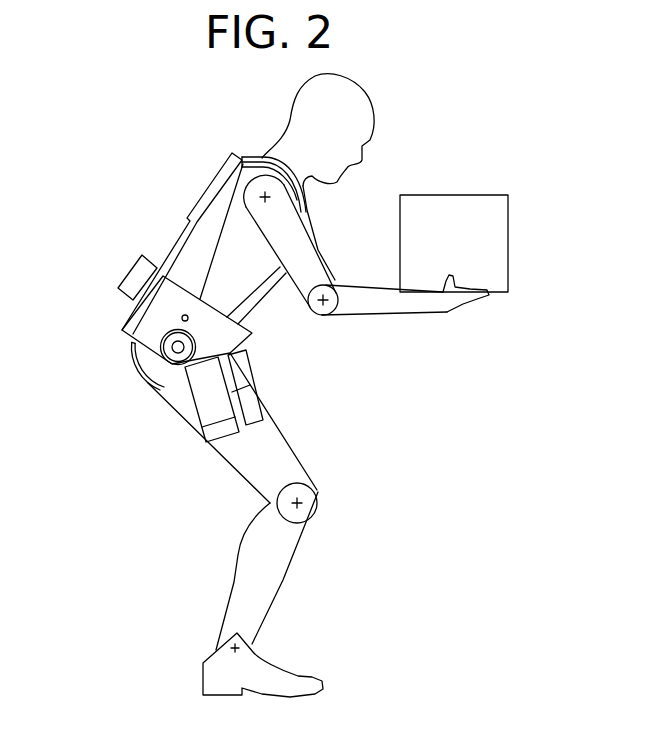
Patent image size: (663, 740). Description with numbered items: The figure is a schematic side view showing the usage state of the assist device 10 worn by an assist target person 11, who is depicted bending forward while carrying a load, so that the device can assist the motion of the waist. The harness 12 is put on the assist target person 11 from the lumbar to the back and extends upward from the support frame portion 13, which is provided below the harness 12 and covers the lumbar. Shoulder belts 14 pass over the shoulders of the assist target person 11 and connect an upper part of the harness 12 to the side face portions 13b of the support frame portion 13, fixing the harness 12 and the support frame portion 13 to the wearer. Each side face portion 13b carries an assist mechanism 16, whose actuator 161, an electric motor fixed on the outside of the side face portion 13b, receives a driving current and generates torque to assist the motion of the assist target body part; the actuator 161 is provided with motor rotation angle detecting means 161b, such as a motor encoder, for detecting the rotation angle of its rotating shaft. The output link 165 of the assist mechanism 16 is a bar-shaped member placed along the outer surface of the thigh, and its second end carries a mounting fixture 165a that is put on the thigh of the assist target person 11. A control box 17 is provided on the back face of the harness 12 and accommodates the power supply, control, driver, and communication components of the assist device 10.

The assist device 10 is at (197, 138).
The assist target person 11 is at (353, 95).
The harness 12 is at (213, 185).
The support frame portion 13 is at (119, 315).
The side face portion 13b is at (120, 332).
The shoulder belt 14 is at (248, 158).
The assist mechanism 16 is at (126, 390).
The actuator 161 is at (175, 363).
The motor rotation angle detecting means 161b is at (177, 352).
The output link 165 is at (217, 393).
The mounting fixture 165a is at (250, 408).
The control box 17 is at (135, 278).